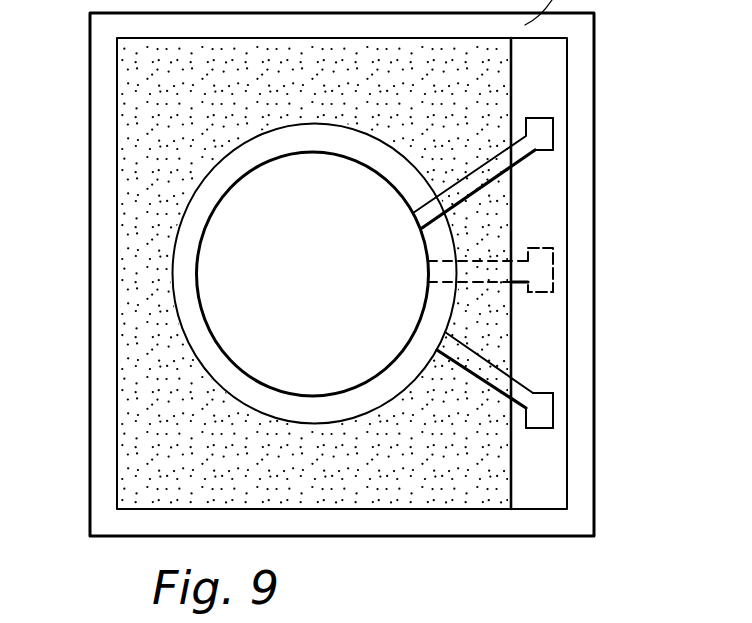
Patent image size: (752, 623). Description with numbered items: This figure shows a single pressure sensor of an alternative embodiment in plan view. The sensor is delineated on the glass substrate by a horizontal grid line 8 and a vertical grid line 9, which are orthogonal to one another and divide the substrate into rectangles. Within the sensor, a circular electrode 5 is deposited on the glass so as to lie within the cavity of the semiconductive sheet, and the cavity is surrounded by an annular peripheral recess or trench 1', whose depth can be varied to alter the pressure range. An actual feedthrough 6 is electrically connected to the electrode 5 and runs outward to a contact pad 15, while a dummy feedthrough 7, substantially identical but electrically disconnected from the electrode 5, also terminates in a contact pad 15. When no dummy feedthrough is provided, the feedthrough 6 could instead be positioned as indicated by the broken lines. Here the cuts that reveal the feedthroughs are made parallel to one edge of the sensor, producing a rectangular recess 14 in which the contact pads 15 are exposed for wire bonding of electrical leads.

The annular peripheral recess or trench 1' is at (315, 274).
The circular electrode 5 is at (326, 272).
The feedthrough 6 is at (476, 178).
The dummy feedthrough 7 is at (478, 363).
The horizontal grid line 8 is at (427, 527).
The vertical grid line 9 is at (90, 421).
The rectangular recess 14 is at (548, 60).
The contact pad 15 is at (541, 122).